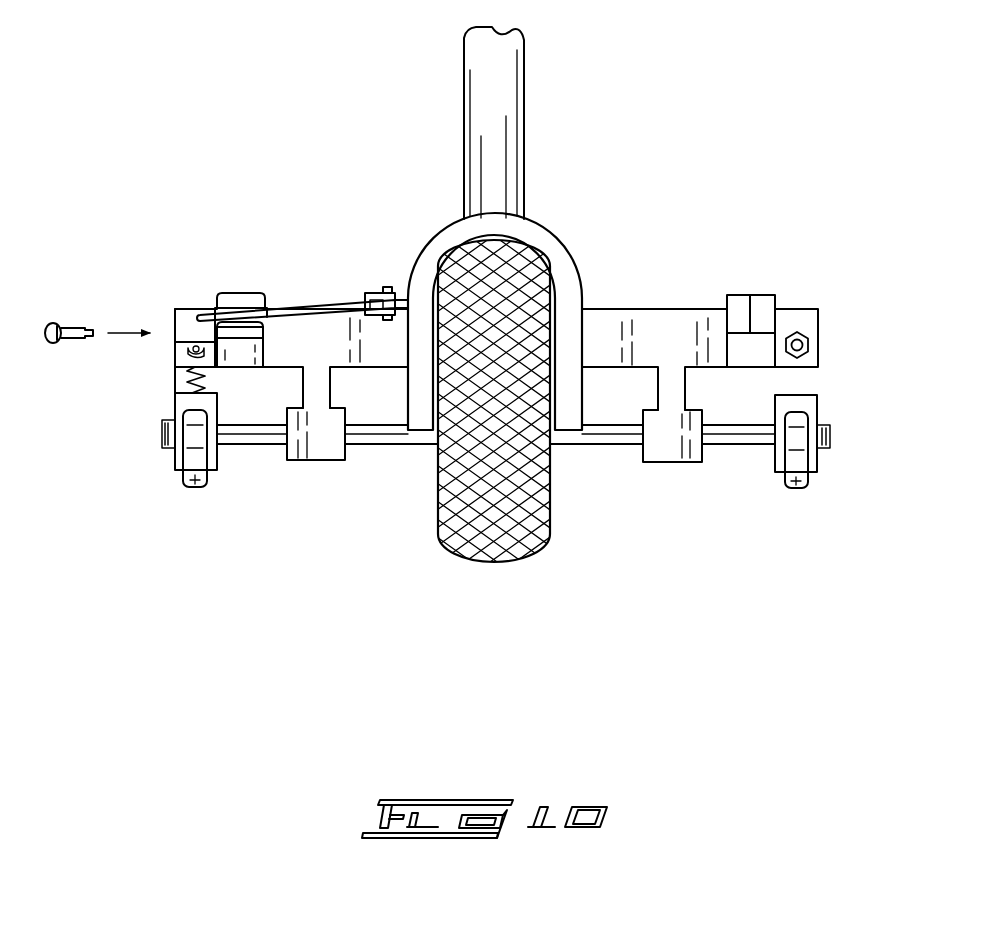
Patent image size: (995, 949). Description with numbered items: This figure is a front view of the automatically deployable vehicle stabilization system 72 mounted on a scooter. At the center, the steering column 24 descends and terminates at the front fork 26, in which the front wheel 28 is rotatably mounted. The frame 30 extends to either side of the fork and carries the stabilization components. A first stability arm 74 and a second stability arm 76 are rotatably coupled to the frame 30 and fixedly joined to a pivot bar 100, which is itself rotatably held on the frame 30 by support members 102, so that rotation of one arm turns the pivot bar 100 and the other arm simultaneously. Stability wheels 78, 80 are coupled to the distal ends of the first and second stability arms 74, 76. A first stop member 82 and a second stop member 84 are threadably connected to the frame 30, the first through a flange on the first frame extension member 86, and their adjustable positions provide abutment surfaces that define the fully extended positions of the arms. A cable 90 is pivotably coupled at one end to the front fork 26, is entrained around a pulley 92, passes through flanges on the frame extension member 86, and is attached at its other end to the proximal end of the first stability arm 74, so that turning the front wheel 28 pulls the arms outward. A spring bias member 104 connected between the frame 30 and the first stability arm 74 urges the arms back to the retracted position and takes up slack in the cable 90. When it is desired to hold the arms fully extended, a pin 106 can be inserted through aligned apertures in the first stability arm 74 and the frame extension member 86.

The steering column 24 is at (495, 82).
The front fork 26 is at (548, 238).
The front wheel 28 is at (493, 533).
The frame 30 is at (675, 335).
The vehicle stabilization system 72 is at (190, 163).
The first stability arm 74 is at (185, 402).
The second stability arm 76 is at (807, 405).
The stability wheel 78 is at (195, 487).
The stability wheel 80 is at (797, 488).
The first stop member 82 is at (180, 357).
The second stop member 84 is at (803, 345).
The first frame extension member 86 is at (387, 281).
The cable 90 is at (327, 300).
The pulley 92 is at (240, 300).
The pivot bar 100 is at (390, 435).
The support members 102 is at (323, 440).
The spring bias member 104 is at (200, 380).
The pin 106 is at (77, 323).